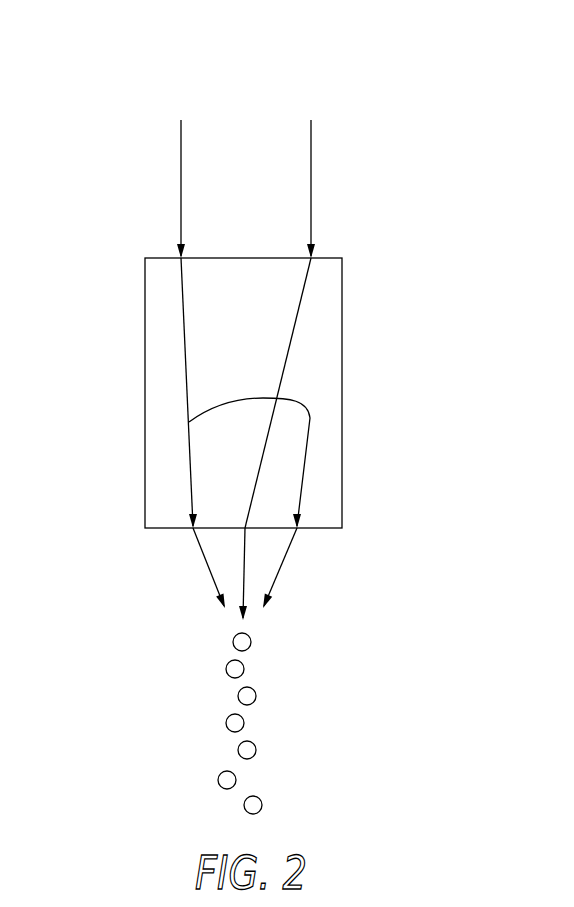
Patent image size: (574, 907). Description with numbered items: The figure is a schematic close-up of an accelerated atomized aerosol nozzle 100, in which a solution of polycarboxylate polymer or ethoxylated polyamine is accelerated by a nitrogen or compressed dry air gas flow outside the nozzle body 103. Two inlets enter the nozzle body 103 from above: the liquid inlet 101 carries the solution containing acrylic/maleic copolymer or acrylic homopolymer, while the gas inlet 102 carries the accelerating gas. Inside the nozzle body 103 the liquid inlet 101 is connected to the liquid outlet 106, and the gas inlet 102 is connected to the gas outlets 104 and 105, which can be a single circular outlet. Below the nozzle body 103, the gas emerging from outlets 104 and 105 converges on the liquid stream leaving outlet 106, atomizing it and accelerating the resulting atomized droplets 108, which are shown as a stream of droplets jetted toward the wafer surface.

The nozzle 100 is at (253, 86).
The liquid inlet 101 is at (312, 167).
The gas inlet 102 is at (180, 148).
The nozzle body 103 is at (343, 365).
The gas outlet 104 is at (207, 567).
The gas outlet 105 is at (283, 560).
The liquid outlet 106 is at (245, 573).
The atomized droplets 108 is at (256, 699).